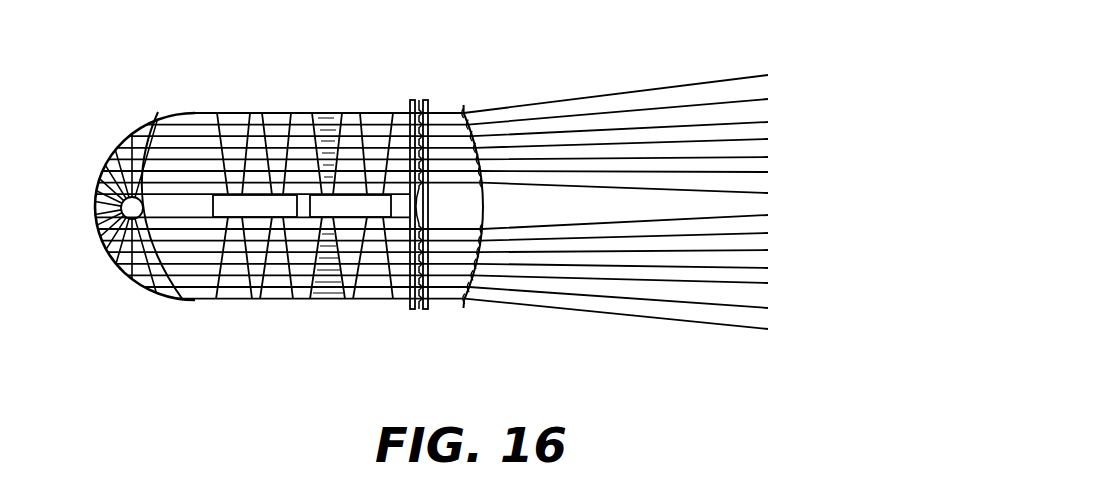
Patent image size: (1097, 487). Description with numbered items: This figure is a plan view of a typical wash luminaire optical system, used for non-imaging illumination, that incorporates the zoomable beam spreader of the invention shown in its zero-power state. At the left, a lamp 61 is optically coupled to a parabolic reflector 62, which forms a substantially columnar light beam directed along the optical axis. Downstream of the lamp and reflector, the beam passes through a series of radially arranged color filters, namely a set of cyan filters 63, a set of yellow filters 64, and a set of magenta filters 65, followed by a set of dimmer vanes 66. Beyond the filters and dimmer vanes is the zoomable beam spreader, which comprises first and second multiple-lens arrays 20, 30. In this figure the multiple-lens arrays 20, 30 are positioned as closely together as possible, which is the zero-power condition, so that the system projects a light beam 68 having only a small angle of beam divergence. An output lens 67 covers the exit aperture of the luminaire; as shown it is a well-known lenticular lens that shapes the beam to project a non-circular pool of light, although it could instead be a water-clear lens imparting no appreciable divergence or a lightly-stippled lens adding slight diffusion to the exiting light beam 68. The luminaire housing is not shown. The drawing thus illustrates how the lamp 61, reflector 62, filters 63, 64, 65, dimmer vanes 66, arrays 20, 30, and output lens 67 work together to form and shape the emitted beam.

The first multiple-lens array 20 is at (412, 105).
The second multiple-lens array 30 is at (425, 105).
The lamp 61 is at (112, 205).
The parabolic reflector 62 is at (115, 152).
The set of cyan filters 63 is at (235, 113).
The set of yellow filters 64 is at (280, 113).
The set of magenta filters 65 is at (325, 113).
The set of dimmer vanes 66 is at (372, 113).
The output lens 67 is at (462, 110).
The light beam 68 is at (565, 96).